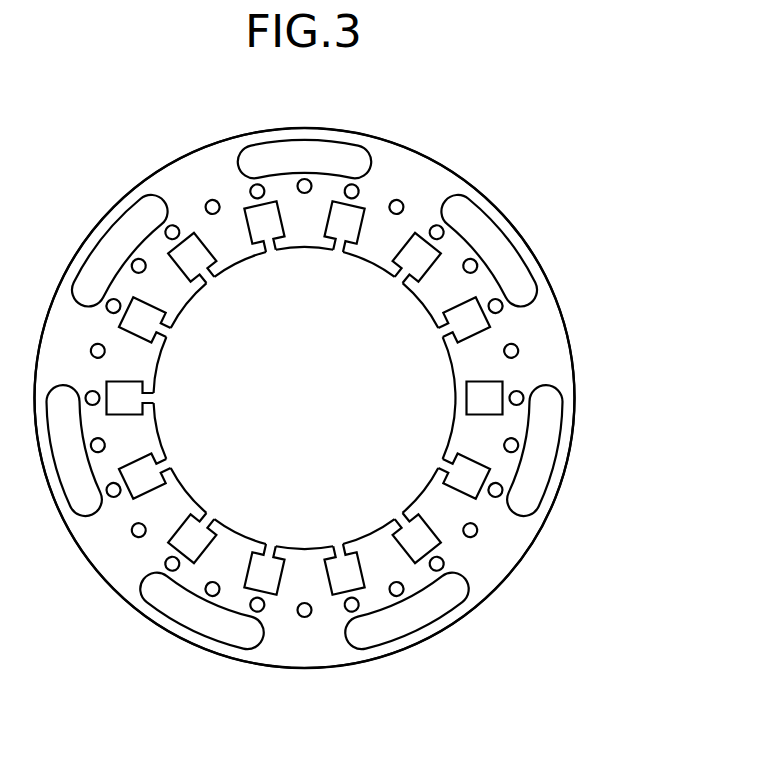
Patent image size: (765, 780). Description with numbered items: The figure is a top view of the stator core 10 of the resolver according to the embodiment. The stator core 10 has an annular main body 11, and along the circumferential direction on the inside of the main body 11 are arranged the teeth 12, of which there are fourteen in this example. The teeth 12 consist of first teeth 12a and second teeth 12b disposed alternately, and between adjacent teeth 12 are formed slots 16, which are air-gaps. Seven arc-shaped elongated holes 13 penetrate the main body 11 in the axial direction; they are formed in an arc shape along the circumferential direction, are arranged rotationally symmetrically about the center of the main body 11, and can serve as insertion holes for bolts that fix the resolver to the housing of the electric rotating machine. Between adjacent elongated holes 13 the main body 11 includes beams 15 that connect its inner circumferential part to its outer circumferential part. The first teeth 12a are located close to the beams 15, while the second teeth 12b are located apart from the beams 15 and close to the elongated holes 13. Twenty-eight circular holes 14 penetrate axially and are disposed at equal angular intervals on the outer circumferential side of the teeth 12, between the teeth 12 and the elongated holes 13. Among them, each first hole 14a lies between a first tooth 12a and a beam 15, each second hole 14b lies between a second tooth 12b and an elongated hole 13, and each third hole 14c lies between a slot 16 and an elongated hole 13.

The stator core 10 is at (558, 131).
The main body 11 is at (421, 163).
The teeth 12 is at (274, 397).
The first tooth 12a is at (467, 355).
The second tooth 12b is at (465, 439).
The elongated hole 13 is at (503, 244).
The holes 14 is at (295, 398).
The first hole 14a is at (524, 356).
The second hole 14b is at (524, 452).
The third hole 14c is at (530, 398).
The beam 15 is at (543, 338).
The slot 16 is at (464, 399).